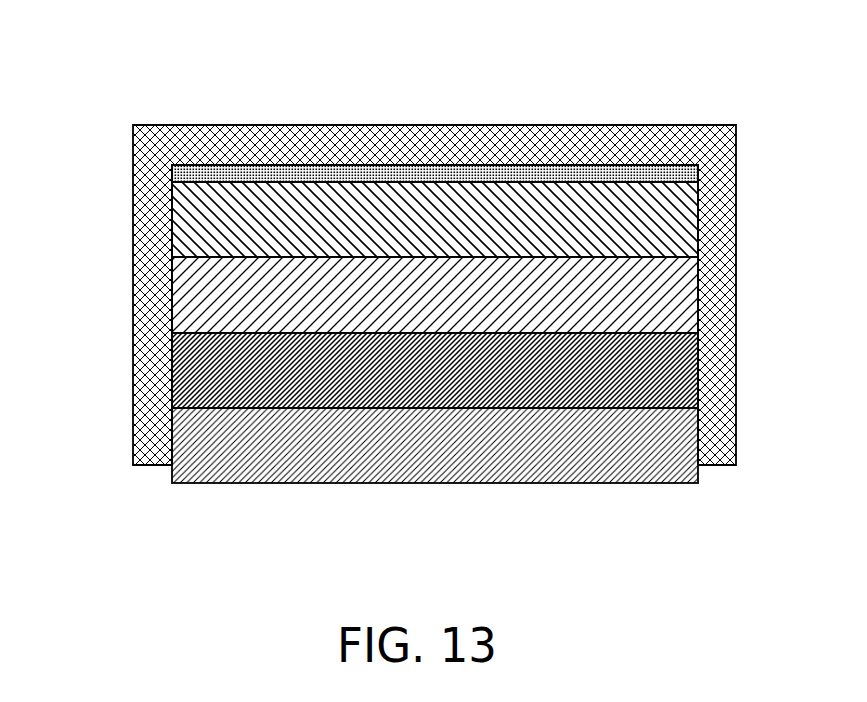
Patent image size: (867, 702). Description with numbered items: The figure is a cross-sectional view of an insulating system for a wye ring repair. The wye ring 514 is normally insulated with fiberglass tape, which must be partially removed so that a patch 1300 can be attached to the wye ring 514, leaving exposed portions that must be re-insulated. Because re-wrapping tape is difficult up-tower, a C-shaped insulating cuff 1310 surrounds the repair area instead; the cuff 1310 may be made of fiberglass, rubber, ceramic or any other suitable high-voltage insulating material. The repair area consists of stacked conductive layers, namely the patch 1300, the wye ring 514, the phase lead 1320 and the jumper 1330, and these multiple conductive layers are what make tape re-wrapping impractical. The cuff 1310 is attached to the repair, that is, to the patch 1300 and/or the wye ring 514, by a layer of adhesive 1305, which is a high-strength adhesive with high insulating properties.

The insulating cuff 1310 is at (442, 126).
The adhesive 1305 is at (675, 167).
The patch 1300 is at (190, 215).
The wye ring 514 is at (687, 306).
The phase lead 1320 is at (185, 362).
The jumper 1330 is at (697, 485).